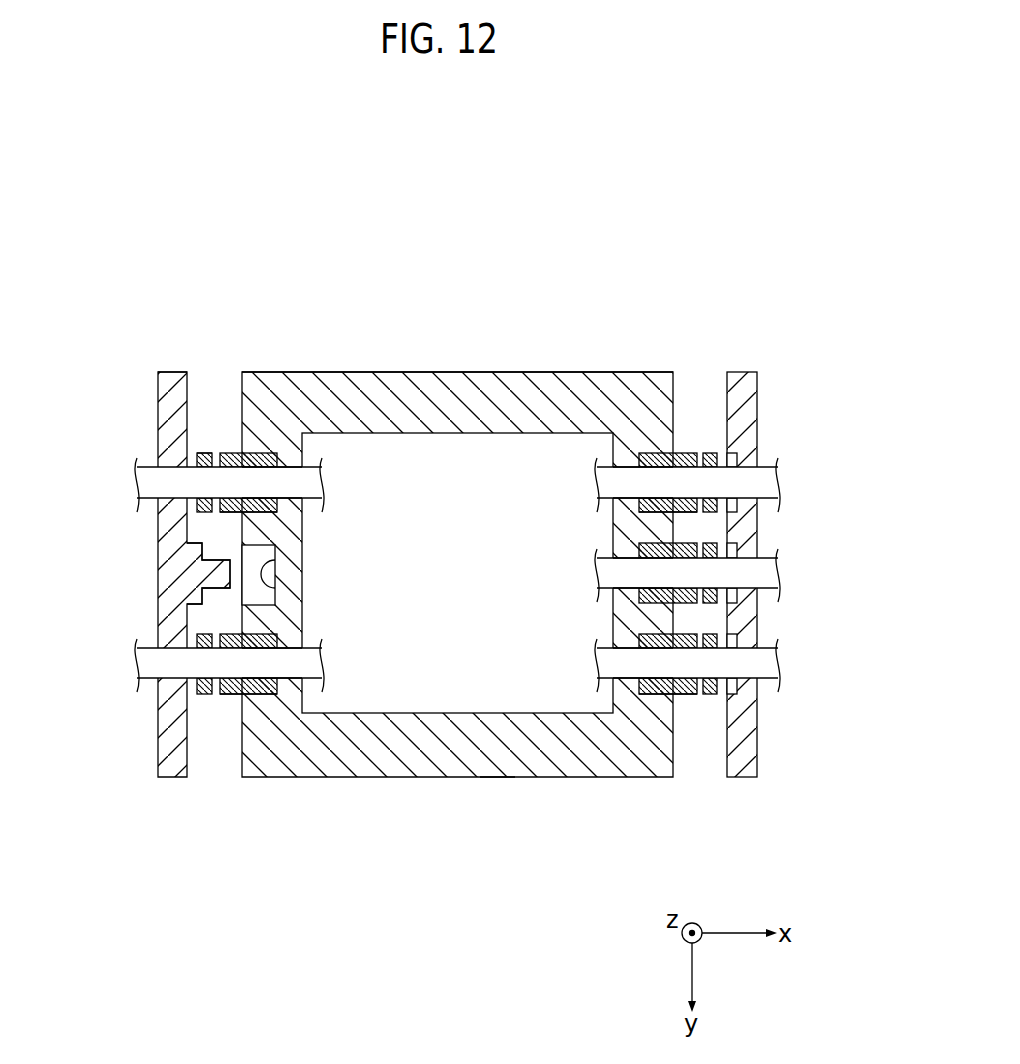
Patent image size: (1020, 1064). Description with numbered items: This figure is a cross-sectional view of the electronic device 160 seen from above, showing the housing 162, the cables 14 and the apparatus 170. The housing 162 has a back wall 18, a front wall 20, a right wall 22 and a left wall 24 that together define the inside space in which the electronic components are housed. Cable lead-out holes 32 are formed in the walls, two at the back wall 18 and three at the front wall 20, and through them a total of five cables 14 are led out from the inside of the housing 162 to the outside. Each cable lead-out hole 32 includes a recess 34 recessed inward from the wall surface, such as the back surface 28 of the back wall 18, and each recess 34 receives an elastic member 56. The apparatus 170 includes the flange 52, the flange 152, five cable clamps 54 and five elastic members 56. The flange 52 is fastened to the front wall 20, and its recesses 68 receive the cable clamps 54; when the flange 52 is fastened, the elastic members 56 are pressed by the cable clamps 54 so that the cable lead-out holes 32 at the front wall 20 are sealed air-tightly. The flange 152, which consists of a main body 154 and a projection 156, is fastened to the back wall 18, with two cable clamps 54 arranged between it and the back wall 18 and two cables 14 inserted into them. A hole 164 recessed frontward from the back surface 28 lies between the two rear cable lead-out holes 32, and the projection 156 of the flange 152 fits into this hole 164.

The cable 14 is at (150, 484).
The back wall 18 is at (290, 610).
The front wall 20 is at (655, 740).
The right wall 22 is at (405, 762).
The left wall 24 is at (442, 371).
The back surface 28 is at (212, 452).
The cable lead-out hole 32 is at (295, 483).
The recess 34 is at (262, 453).
The flange 52 is at (744, 362).
The cable clamp 54 is at (198, 452).
The elastic member 56 is at (655, 452).
The recess 68 is at (736, 455).
The flange 152 is at (170, 362).
The main body 154 is at (158, 410).
The projection 156 is at (212, 594).
The electronic device 160 is at (788, 113).
The housing 162 is at (498, 786).
The hole 164 is at (268, 576).
The apparatus 170 is at (213, 275).